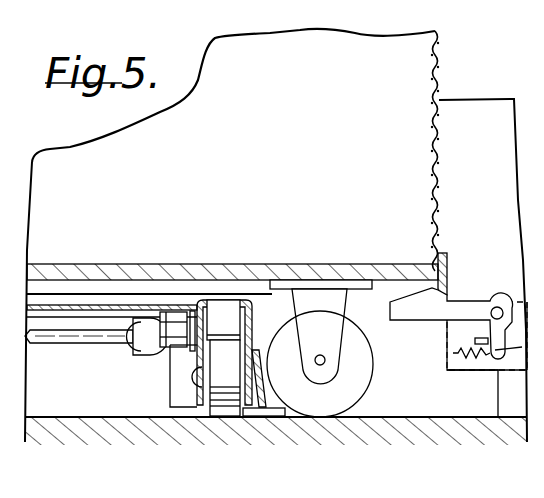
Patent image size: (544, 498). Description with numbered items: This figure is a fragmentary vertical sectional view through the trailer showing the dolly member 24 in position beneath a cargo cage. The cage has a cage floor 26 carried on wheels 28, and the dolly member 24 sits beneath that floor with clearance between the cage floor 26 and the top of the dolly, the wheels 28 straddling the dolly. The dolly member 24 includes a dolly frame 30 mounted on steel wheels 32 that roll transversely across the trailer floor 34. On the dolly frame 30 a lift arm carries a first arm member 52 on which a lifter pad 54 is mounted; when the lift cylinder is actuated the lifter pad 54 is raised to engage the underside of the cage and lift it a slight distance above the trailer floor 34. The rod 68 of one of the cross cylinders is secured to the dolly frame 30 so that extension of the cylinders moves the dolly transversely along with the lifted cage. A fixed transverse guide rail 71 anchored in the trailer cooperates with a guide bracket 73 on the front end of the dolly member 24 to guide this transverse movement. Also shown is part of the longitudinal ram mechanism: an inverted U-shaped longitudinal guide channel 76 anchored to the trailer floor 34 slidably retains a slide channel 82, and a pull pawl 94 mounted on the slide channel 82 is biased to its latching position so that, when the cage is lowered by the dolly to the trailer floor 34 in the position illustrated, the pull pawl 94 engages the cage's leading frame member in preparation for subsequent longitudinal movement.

The dolly member 24 is at (146, 300).
The cage floor 26 is at (116, 281).
The wheels 28 is at (368, 371).
The dolly frame 30 is at (79, 306).
The steel wheels 32 is at (222, 418).
The trailer floor 34 is at (80, 416).
The first arm member 52 is at (220, 338).
The lifter pad 54 is at (228, 302).
The rod 68 is at (72, 343).
The fixed transverse guide rail 71 is at (258, 418).
The guide bracket 73 is at (262, 380).
The longitudinal guide channel 76 is at (500, 393).
The slide channel 82 is at (452, 343).
The pull pawl 94 is at (415, 266).